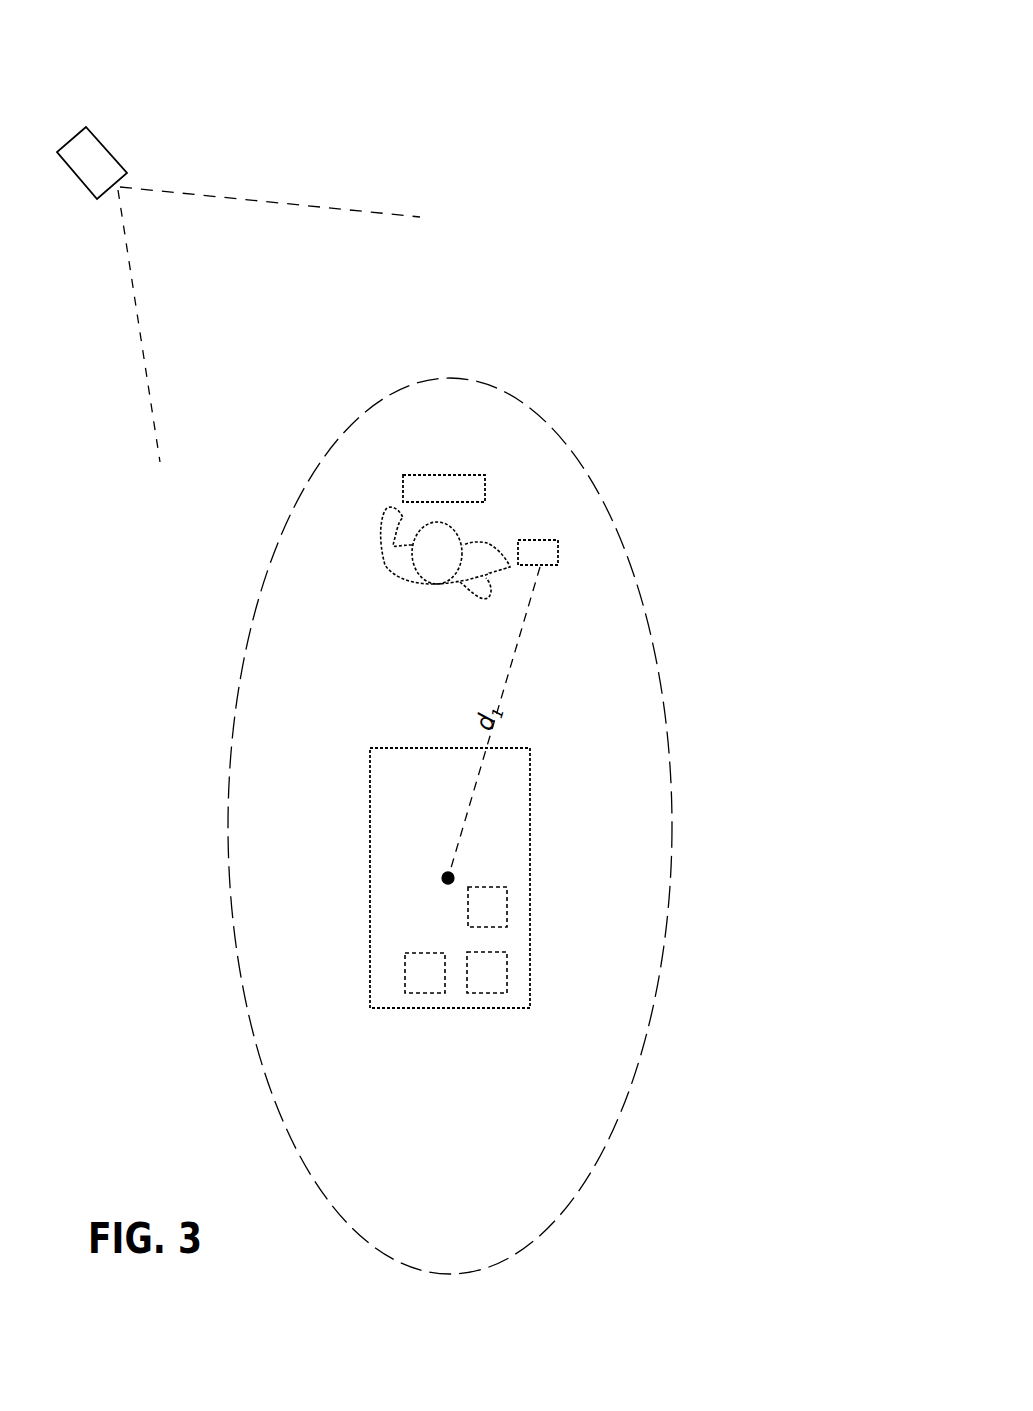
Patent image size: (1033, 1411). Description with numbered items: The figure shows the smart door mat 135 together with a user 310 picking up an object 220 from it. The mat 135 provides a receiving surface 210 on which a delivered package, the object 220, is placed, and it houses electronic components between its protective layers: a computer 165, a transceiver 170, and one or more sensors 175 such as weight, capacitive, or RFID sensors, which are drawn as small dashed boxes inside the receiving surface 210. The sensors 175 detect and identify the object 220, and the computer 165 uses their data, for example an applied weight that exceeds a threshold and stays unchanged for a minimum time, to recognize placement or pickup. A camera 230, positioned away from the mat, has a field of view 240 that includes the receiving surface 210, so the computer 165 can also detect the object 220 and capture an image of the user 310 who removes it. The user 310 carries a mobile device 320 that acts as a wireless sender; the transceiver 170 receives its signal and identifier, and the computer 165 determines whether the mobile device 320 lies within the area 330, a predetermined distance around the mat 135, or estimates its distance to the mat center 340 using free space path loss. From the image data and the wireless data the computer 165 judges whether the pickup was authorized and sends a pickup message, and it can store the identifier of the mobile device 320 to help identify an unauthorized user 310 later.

The mat 135 is at (370, 818).
The computer 165 is at (395, 973).
The transceiver 170 is at (457, 950).
The sensors 175 is at (485, 887).
The receiving surface 210 is at (450, 878).
The object 220 is at (403, 492).
The camera 230 is at (98, 140).
The field of view 240 is at (305, 180).
The user 310 is at (500, 573).
The mobile device 320 is at (558, 550).
The area 330 is at (573, 448).
The mat center 340 is at (442, 877).